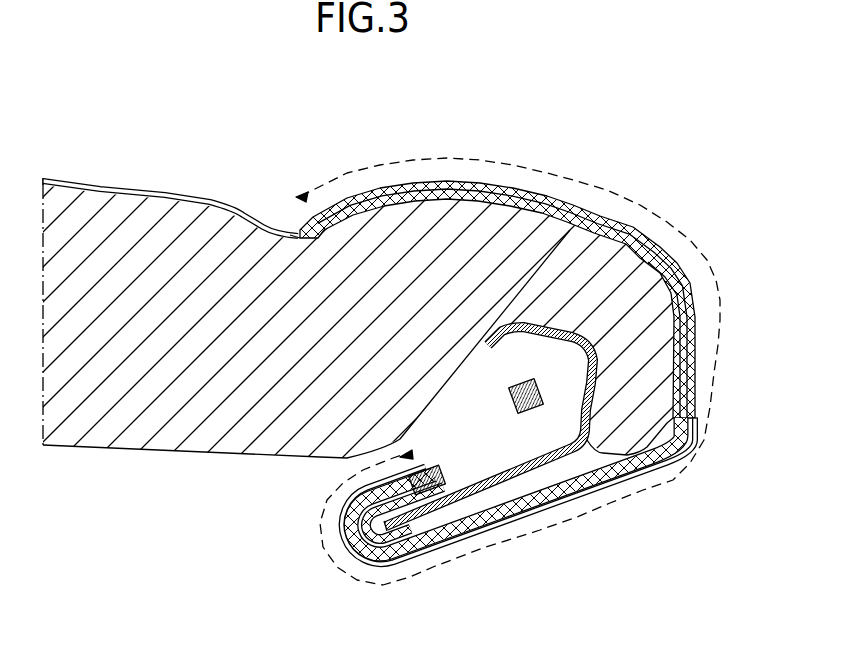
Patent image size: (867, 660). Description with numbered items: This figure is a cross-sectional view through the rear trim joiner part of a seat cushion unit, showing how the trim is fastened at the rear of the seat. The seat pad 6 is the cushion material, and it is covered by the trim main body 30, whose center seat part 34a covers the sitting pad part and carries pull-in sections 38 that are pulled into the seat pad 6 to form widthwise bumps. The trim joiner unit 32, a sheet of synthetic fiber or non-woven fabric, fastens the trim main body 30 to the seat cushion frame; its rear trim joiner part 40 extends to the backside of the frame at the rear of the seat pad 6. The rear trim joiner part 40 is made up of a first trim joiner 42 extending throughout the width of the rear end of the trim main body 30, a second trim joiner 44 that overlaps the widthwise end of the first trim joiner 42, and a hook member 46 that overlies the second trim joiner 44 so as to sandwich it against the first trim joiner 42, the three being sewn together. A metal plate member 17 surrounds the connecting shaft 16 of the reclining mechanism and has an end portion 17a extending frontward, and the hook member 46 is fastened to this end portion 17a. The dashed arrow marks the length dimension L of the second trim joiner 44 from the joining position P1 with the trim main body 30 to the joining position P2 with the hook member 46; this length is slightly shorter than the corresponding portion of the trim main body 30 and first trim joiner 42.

The seat pad 6 is at (200, 421).
The connecting shaft 16 is at (513, 390).
The plate member 17 is at (449, 485).
The end portion 17a is at (367, 562).
The trim main body 30 is at (170, 171).
The center seat part 34a is at (175, 194).
The trim joiner unit 32 is at (627, 486).
The pull-in section 38 is at (277, 233).
The rear trim joiner part 40 is at (497, 412).
The first trim joiner 42 is at (567, 503).
The second trim joiner 44 is at (603, 238).
The hook member 46 is at (407, 540).
The joining position P1 is at (303, 228).
The joining position P2 is at (422, 467).
The length dimension L is at (718, 360).